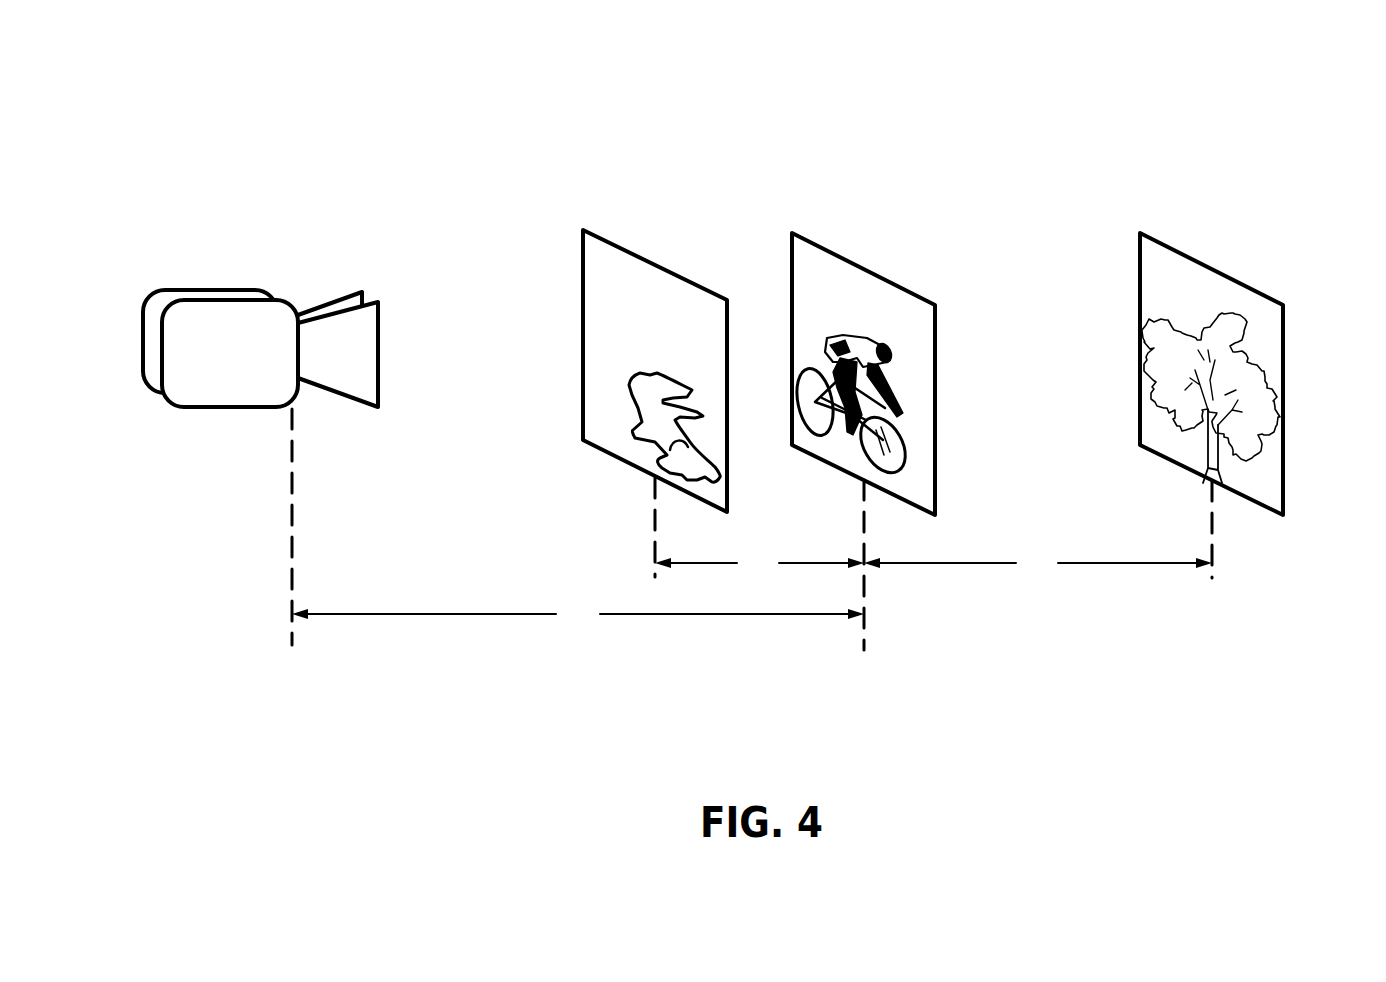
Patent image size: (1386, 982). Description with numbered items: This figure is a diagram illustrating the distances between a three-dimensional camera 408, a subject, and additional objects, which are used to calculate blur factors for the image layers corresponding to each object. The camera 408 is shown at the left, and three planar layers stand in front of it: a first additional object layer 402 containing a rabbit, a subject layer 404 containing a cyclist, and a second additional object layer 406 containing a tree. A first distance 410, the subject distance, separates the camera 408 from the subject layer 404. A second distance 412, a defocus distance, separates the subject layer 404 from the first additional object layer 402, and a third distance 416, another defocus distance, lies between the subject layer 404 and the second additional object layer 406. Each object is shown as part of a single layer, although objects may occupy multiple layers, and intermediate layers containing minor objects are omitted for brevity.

The first additional object layer 402 is at (657, 260).
The subject layer 404 is at (865, 262).
The second additional object layer 406 is at (1212, 262).
The 3D camera 408 is at (238, 267).
The first distance 410 is at (560, 625).
The second distance 412 is at (740, 574).
The third distance 416 is at (1019, 574).